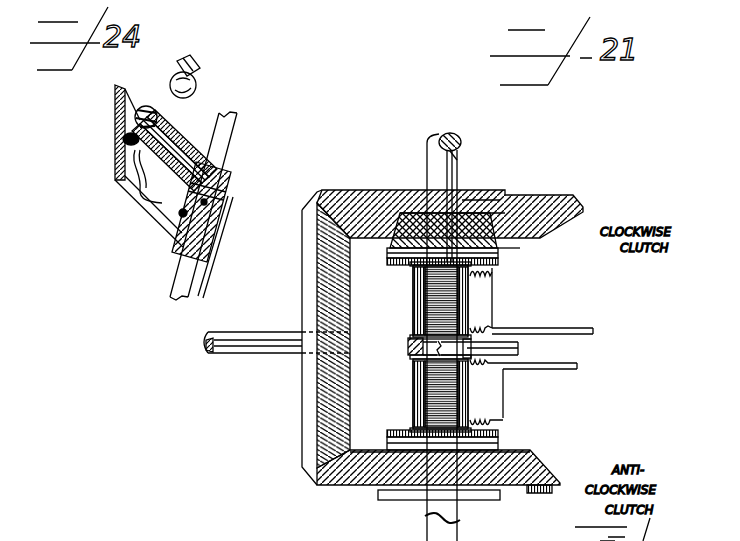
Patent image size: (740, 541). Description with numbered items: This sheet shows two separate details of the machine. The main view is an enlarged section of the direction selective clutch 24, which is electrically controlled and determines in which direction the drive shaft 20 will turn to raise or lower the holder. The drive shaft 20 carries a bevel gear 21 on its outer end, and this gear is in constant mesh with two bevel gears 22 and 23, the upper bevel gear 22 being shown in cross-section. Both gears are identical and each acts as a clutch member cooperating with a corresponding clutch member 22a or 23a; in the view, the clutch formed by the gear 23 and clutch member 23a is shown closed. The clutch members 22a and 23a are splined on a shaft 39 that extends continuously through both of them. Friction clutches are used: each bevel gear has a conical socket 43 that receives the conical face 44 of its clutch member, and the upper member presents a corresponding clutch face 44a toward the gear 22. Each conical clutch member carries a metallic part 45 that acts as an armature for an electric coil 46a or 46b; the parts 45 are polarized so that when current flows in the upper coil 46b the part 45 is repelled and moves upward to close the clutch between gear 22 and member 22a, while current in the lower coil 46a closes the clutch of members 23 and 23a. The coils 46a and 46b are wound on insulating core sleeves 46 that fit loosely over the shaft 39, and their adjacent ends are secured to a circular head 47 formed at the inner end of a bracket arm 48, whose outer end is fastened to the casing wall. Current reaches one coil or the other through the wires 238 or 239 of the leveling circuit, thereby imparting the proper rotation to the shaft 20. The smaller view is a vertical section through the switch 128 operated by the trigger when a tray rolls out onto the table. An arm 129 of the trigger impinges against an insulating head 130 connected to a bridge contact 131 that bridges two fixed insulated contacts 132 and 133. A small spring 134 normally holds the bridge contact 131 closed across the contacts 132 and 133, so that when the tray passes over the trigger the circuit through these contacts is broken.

In FIG. 21, the drive shaft 20 is at (255, 347).
In FIG. 21, the bevel gear 21 is at (303, 287).
In FIG. 21, the upper bevel gear 22 is at (536, 200).
In FIG. 21, the clutch member 22a is at (498, 250).
In FIG. 21, the lower bevel gear 23 is at (549, 478).
In FIG. 21, the clutch member 23a is at (512, 452).
In FIG. 21, the direction selective clutch 24 is at (533, 319).
In FIG. 21, the shaft 39 is at (427, 165).
In FIG. 21, the conical socket 43 is at (441, 265).
In FIG. 21, the conical face 44 is at (400, 238).
In FIG. 21, the clutch face 44a is at (468, 200).
In FIG. 21, the metallic part 45 is at (498, 262).
In FIG. 21, the insulating core sleeve 46 is at (468, 302).
In FIG. 21, the electric coil 46a is at (413, 374).
In FIG. 21, the electric coil 46b is at (413, 302).
In FIG. 21, the circular head 47 is at (408, 345).
In FIG. 21, the bracket arm 48 is at (518, 348).
In FIG. 21, the wire 238 is at (575, 372).
In FIG. 21, the wire 239 is at (582, 326).
In FIG. 24, the switch 128 is at (168, 148).
In FIG. 24, the arm 129 is at (198, 66).
In FIG. 24, the insulating head 130 is at (147, 106).
In FIG. 24, the bridge contact 131 is at (124, 137).
In FIG. 24, the fixed insulated contact 132 is at (128, 124).
In FIG. 24, the fixed insulated contact 133 is at (178, 160).
In FIG. 24, the spring 134 is at (133, 167).